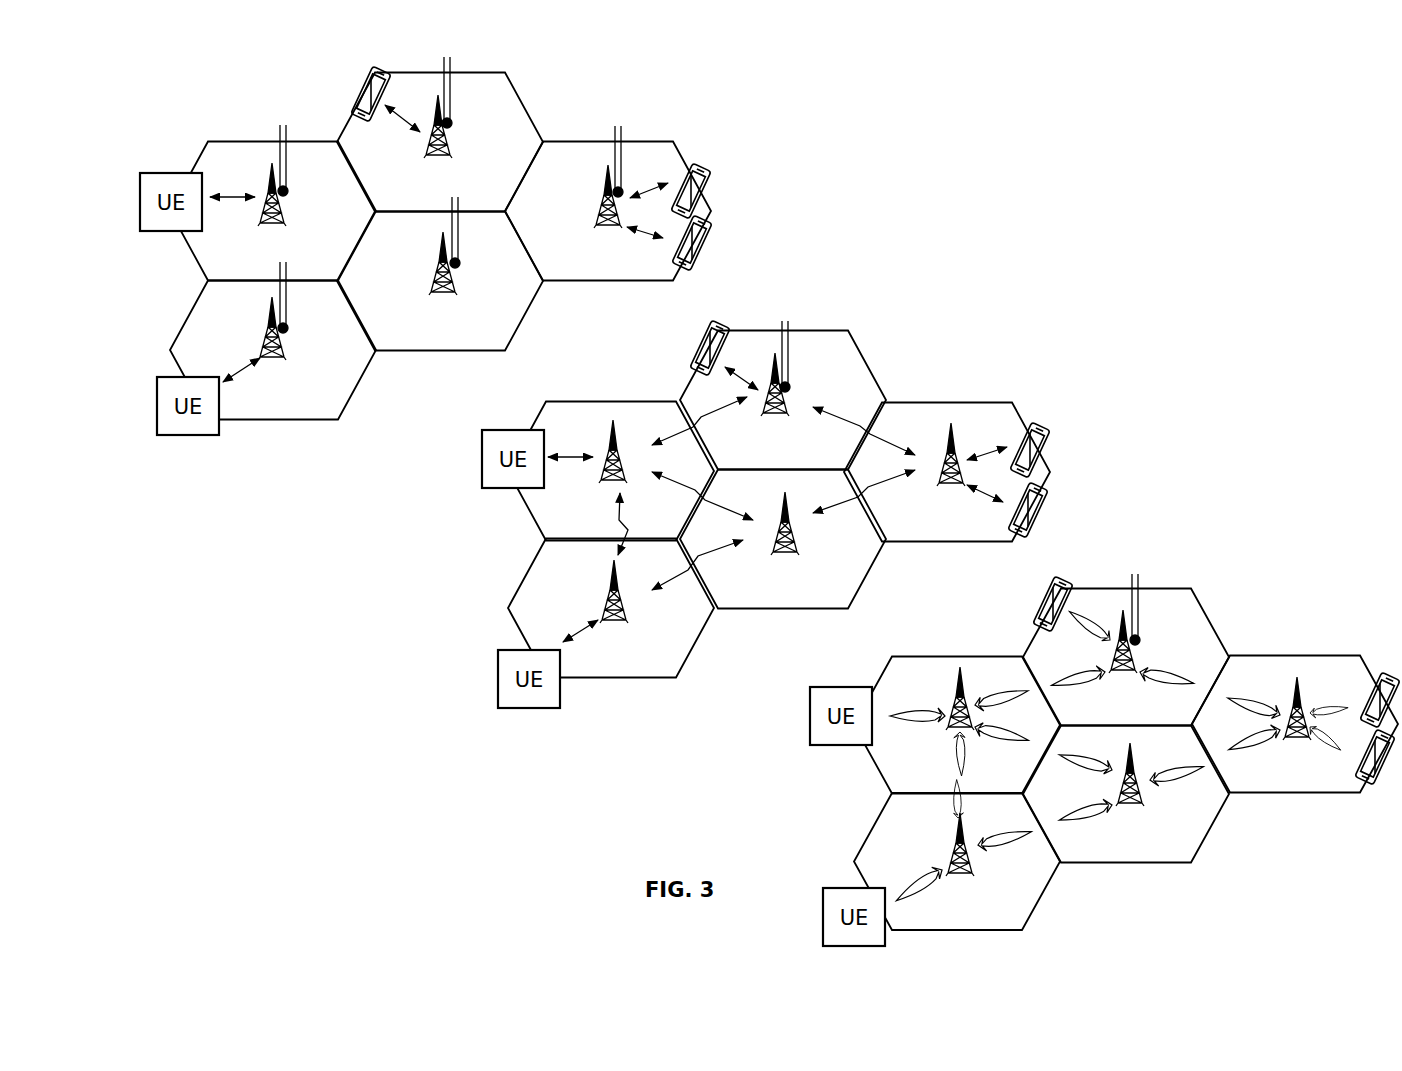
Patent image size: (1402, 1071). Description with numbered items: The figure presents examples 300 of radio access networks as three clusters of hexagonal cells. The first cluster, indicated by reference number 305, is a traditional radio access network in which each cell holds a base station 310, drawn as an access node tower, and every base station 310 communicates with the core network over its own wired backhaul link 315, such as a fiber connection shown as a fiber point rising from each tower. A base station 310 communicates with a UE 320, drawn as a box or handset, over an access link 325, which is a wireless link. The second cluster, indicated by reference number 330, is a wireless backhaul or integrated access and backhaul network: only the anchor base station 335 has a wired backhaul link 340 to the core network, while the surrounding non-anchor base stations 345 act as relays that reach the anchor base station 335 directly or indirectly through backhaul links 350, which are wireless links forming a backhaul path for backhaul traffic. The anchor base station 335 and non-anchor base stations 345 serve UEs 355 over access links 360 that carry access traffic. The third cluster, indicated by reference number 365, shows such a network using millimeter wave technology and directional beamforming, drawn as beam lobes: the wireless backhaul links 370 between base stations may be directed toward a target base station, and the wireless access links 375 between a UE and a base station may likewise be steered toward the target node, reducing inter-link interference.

The examples of radio access networks 300 is at (200, 72).
The traditional radio access network 305 is at (330, 97).
The base station 310 is at (585, 207).
The wired backhaul link 315 is at (615, 128).
The UE 320 is at (714, 194).
The access link 325 is at (647, 183).
The radio access network with wireless backhaul network 330 is at (665, 365).
The anchor base station 335 is at (790, 393).
The wired backhaul link 340 is at (792, 327).
The non-anchor base station 345 is at (770, 560).
The backhaul link 350 is at (682, 490).
The UE 355 is at (1048, 457).
The access link 360 is at (988, 442).
The radio access network using millimeter wave and beamforming 365 is at (1015, 640).
The wireless backhaul link 370 is at (1252, 697).
The wireless access link 375 is at (1332, 713).